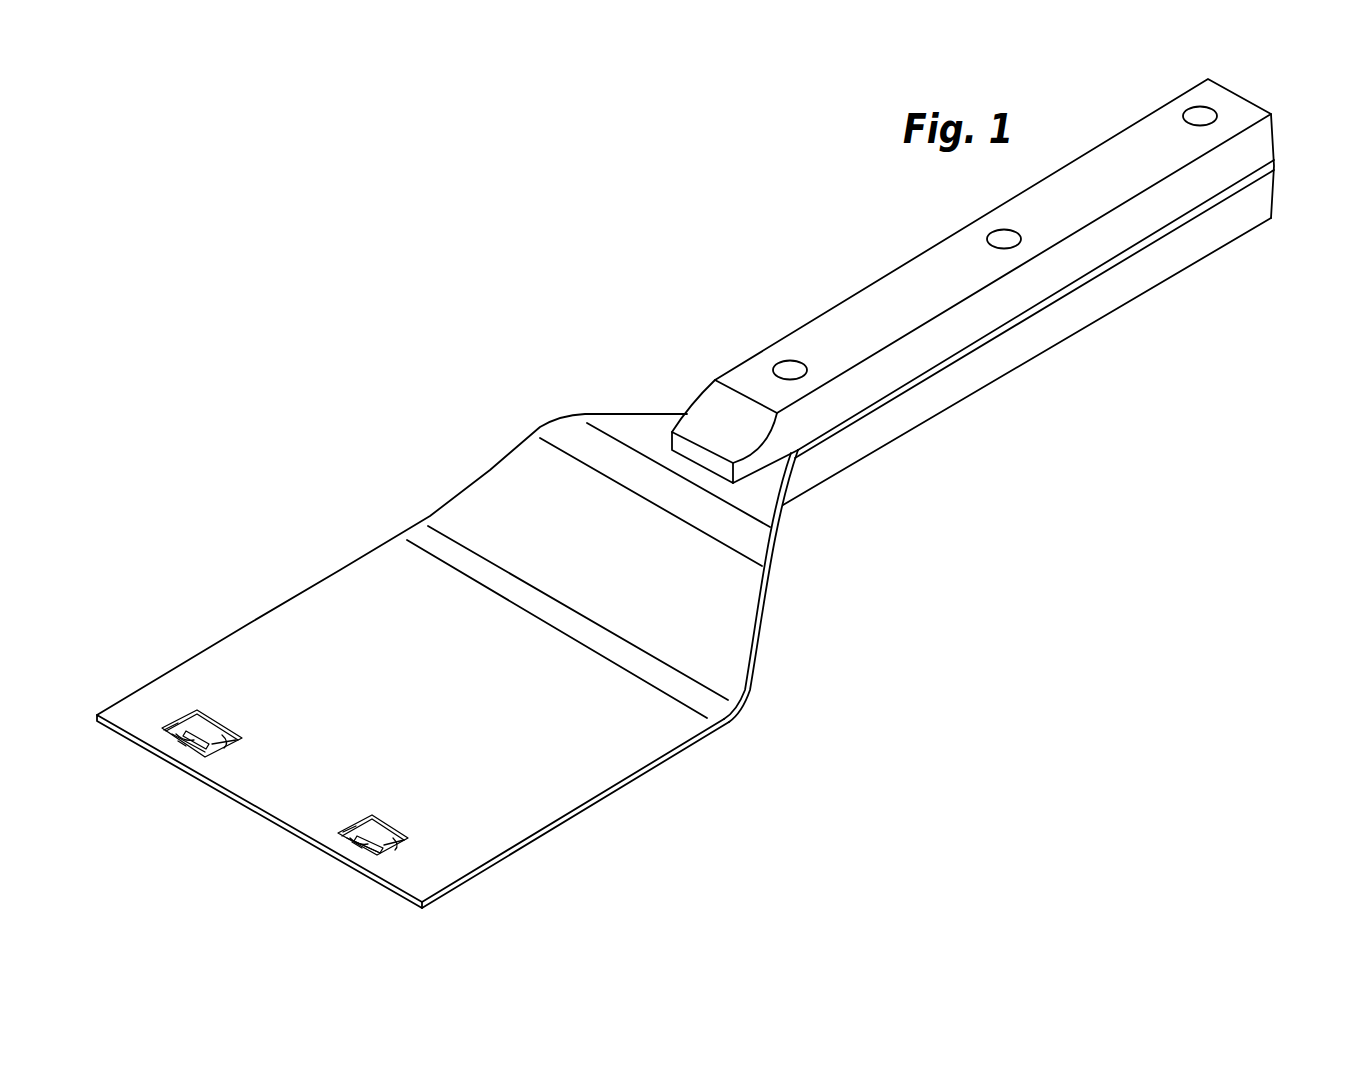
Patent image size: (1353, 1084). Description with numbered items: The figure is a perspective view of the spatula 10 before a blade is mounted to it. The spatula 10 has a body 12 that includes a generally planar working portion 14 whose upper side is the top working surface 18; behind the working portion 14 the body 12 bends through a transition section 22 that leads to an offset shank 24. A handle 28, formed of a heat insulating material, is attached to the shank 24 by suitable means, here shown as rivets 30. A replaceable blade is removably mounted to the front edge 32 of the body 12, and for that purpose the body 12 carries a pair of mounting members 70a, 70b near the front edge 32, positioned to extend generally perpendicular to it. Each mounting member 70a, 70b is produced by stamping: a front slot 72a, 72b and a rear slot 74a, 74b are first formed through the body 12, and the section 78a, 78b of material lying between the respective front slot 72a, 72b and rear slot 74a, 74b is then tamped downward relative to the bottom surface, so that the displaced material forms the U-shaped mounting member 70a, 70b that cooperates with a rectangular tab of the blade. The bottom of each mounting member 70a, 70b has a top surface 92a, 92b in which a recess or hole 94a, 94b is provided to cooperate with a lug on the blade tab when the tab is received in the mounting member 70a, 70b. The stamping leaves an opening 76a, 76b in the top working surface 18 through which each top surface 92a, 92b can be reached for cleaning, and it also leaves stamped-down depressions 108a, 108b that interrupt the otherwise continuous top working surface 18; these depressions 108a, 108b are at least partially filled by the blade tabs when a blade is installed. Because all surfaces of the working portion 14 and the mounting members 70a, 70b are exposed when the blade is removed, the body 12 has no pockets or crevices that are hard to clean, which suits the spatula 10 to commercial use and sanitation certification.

The spatula 10 is at (645, 312).
The body 12 is at (480, 462).
The working portion 14 is at (607, 773).
The top working surface 18 is at (392, 588).
The transition section 22 is at (766, 617).
The offset shank 24 is at (1023, 314).
The handle 28 is at (925, 281).
The rivets 30 is at (1205, 110).
The front edge 32 is at (258, 817).
The mounting member 70a is at (170, 711).
The mounting member 70b is at (395, 818).
The front slot 72a is at (203, 753).
The front slot 72b is at (375, 845).
The rear slot 74a is at (220, 725).
The rear slot 74b is at (400, 832).
The opening 76a is at (193, 710).
The opening 76b is at (380, 825).
The section 78a is at (232, 727).
The section 78b is at (408, 837).
The top surface 92a is at (217, 740).
The top surface 92b is at (365, 823).
The hole 94a is at (175, 727).
The hole 94b is at (355, 828).
The depression 108a is at (183, 748).
The depression 108b is at (360, 817).